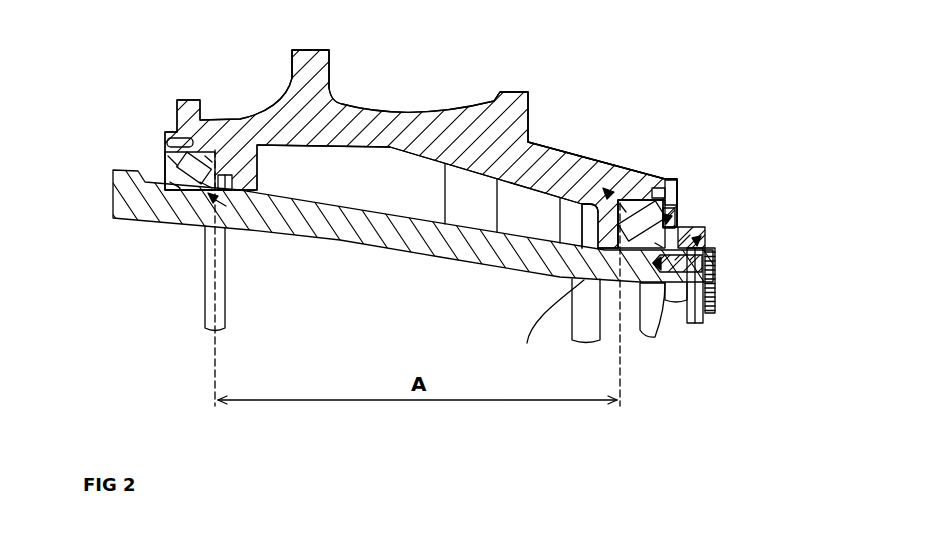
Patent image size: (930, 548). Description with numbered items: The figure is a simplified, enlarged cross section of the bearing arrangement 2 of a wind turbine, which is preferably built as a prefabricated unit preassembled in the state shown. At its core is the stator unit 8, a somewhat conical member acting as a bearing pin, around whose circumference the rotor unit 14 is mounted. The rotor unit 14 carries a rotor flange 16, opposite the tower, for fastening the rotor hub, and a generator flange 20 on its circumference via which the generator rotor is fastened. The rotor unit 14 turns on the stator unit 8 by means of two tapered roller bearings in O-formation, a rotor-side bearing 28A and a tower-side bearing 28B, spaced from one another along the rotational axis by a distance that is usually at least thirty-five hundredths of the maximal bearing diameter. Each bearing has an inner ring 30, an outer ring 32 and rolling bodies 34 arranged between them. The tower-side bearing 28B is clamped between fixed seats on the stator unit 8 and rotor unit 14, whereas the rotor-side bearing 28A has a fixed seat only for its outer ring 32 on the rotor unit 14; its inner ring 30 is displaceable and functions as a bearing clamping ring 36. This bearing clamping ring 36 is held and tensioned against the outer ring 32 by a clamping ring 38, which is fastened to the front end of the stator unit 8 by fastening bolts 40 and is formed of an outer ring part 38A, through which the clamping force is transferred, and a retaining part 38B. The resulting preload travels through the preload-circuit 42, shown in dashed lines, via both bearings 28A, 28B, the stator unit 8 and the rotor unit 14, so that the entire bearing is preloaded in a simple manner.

The bearing arrangement 2 is at (716, 116).
The stator unit 8 is at (392, 239).
The rotor unit 14 is at (352, 121).
The rotor flange 16 is at (532, 104).
The generator flange 20 is at (300, 76).
The preload-circuit 42 is at (449, 138).
The rotor-side bearing 28A is at (712, 313).
The tower-side bearing 28B is at (158, 163).
The inner ring 30 is at (660, 337).
The bearing clamping ring 36 is at (652, 310).
The outer ring 32 is at (636, 214).
The rolling bodies 34 is at (660, 192).
The clamping ring 38 is at (718, 254).
The outer ring part 38A is at (708, 236).
The retaining part 38B is at (693, 323).
The fastening bolts 40 is at (680, 300).